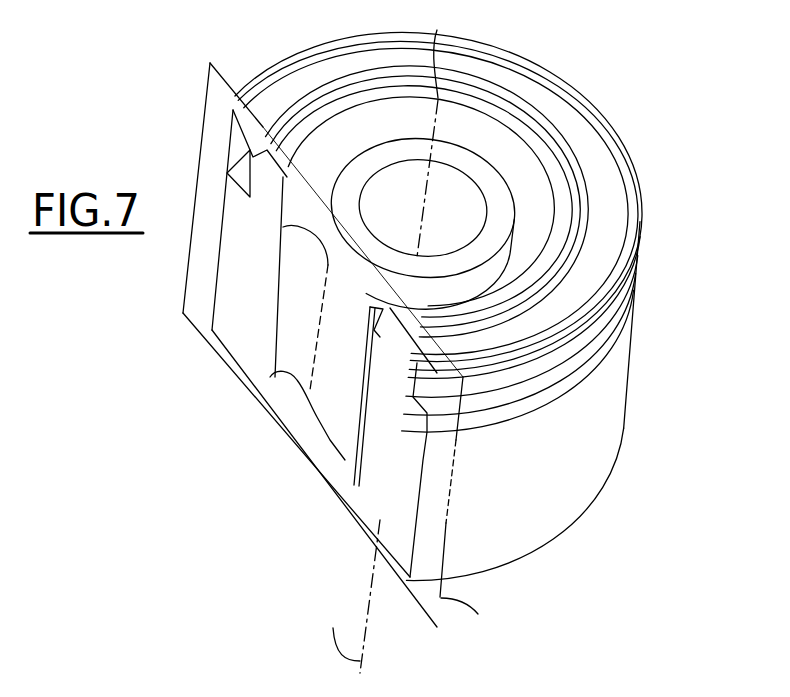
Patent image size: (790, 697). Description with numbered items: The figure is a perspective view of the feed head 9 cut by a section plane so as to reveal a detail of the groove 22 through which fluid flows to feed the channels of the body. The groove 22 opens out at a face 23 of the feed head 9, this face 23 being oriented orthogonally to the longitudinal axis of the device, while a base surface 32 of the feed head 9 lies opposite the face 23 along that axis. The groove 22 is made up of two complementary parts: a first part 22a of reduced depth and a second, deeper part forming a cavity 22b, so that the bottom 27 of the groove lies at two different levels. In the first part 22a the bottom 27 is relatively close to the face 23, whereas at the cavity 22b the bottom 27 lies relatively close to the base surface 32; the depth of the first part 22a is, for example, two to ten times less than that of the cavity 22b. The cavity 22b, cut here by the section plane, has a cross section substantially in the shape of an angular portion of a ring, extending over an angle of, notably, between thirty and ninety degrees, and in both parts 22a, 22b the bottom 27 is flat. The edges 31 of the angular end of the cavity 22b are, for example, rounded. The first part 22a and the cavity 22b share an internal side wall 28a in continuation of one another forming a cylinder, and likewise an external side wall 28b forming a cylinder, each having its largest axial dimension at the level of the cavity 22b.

The feed head 9 is at (623, 78).
The groove 22 is at (462, 122).
The first part of the groove 22a is at (331, 180).
The cavity 22b is at (297, 337).
The face 23 is at (500, 211).
The bottom of the groove 27 is at (530, 250).
The internal side wall 28a is at (497, 270).
The external side wall 28b is at (512, 150).
The edges of the angular end of the cavity 31 is at (299, 283).
The base surface 32 is at (542, 557).